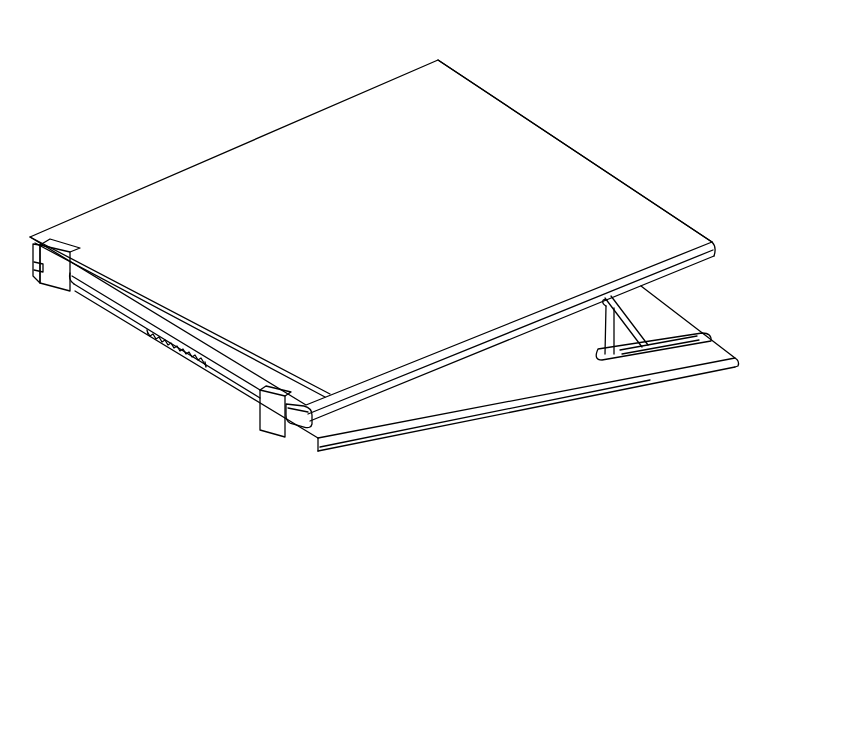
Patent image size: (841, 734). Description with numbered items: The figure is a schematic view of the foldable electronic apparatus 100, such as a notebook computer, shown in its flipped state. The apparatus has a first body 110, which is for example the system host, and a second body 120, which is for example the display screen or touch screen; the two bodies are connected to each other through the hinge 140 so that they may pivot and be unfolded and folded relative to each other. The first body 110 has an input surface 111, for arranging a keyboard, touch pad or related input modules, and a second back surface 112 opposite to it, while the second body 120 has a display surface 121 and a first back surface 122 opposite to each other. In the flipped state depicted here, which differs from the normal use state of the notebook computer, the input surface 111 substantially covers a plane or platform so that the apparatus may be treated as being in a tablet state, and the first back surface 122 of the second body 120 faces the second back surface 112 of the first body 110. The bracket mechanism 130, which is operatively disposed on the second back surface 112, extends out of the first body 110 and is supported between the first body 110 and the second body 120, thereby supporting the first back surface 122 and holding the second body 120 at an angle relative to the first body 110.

The foldable electronic apparatus 100 is at (118, 652).
The first body 110 is at (522, 401).
The input surface 111 is at (530, 413).
The second back surface 112 is at (498, 374).
The second body 120 is at (397, 229).
The display surface 121 is at (473, 100).
The first back surface 122 is at (674, 276).
The bracket mechanism 130 is at (648, 318).
The hinge 140 is at (57, 278).